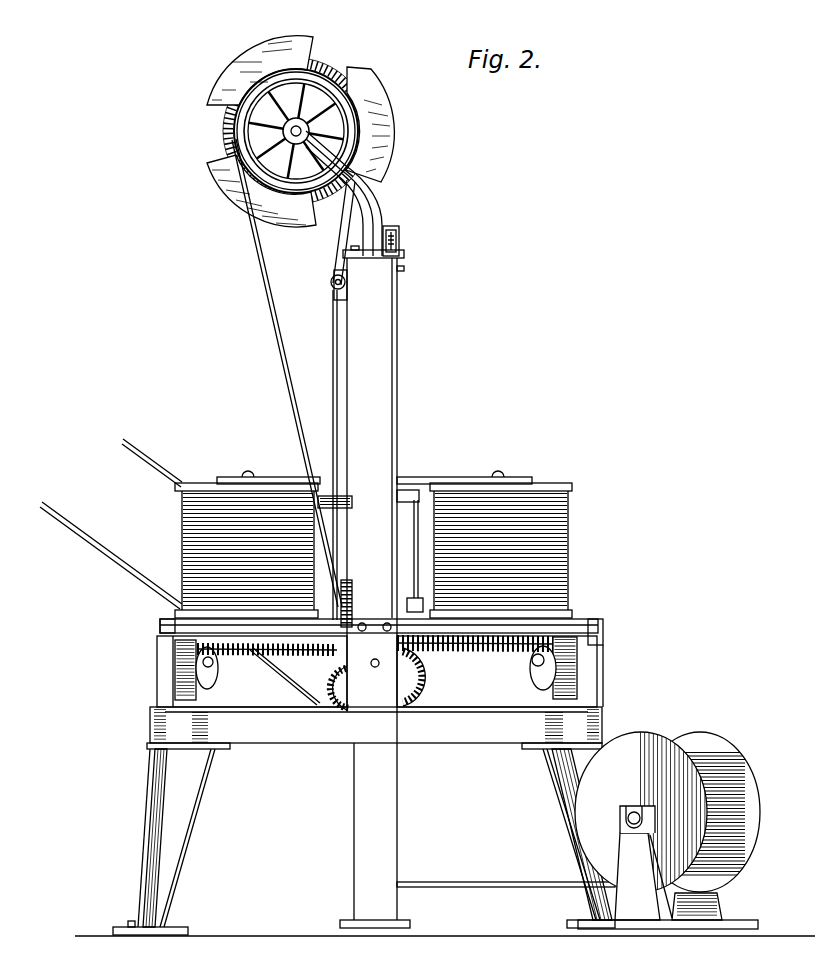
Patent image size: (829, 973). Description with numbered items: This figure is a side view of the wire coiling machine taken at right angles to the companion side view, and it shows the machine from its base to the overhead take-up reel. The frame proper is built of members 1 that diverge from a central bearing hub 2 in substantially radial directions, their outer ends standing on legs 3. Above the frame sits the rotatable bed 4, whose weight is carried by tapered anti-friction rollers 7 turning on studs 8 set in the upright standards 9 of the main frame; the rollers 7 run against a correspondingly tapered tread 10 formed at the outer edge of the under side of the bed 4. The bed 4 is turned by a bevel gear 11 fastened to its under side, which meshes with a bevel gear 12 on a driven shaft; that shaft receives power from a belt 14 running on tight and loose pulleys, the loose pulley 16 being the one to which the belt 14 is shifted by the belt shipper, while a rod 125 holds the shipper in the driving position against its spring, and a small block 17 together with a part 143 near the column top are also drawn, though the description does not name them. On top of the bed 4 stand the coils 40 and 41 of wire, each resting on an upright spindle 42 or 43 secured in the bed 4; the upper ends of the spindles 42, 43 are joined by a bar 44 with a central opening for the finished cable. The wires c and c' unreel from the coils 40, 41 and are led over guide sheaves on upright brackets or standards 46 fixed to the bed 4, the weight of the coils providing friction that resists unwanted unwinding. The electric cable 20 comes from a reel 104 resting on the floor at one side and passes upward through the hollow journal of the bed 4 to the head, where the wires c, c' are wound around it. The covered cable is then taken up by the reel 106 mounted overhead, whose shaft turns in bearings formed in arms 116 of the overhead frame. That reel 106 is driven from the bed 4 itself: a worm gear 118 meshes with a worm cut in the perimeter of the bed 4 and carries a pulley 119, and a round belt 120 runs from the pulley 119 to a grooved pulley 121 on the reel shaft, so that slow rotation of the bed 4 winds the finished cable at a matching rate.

The frame member 1 is at (278, 728).
The central bearing hub 2 is at (352, 735).
The leg 3 is at (150, 822).
The bed 4 is at (592, 620).
The anti-friction roller 7 is at (175, 680).
The stud 8 is at (212, 664).
The upright projection or standard 9 is at (165, 655).
The tapered tread 10 is at (285, 652).
The bevel gear 11 is at (466, 652).
The bevel gear 12 is at (332, 740).
The belt 14 is at (95, 538).
The loose pulley 16 is at (425, 700).
The block 17 is at (420, 600).
The electric cable 20 is at (492, 882).
The coil 40 is at (184, 485).
The coil 41 is at (560, 481).
The upright spindle 42 is at (250, 470).
The upright spindle 43 is at (500, 473).
The bar 44 is at (410, 476).
The bracket or standard 46 is at (419, 585).
The reel 104 is at (640, 760).
The reel 106 is at (232, 90).
The arm 116 is at (384, 197).
The worm gear 118 is at (354, 612).
The pulley 119 is at (350, 596).
The belt 120 is at (287, 373).
The pulley 121 is at (345, 100).
The rod 125 is at (400, 237).
The plunger 143 is at (389, 226).
The wire c is at (272, 321).
The wire c' is at (551, 550).